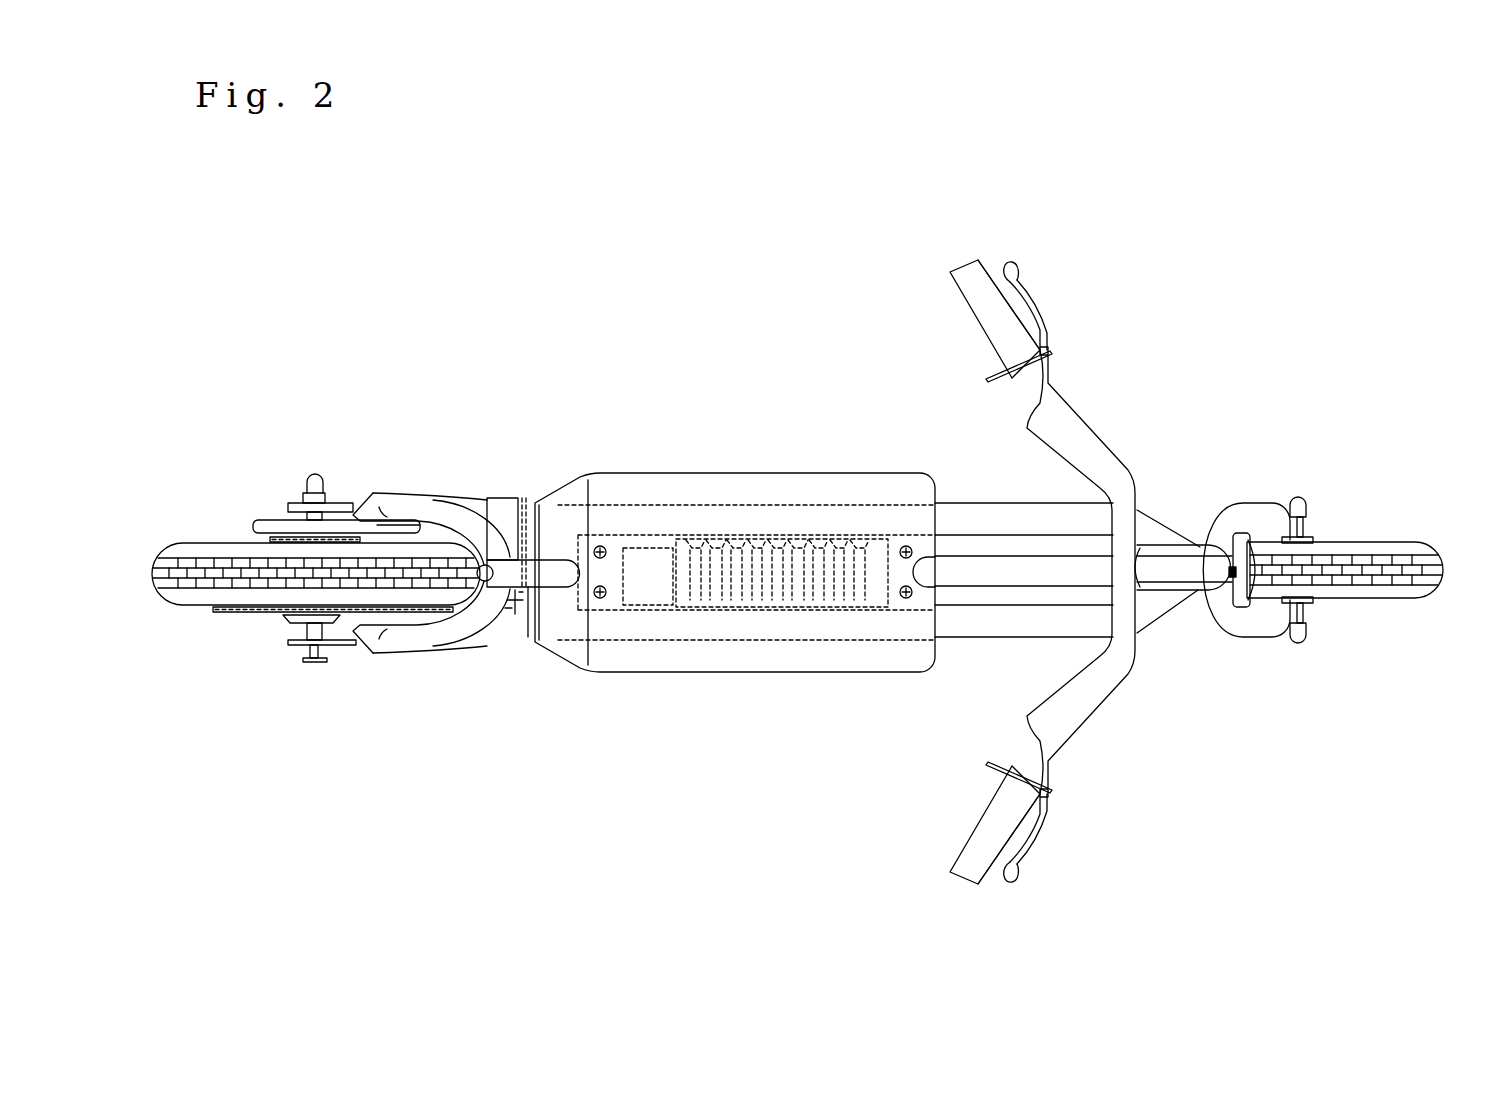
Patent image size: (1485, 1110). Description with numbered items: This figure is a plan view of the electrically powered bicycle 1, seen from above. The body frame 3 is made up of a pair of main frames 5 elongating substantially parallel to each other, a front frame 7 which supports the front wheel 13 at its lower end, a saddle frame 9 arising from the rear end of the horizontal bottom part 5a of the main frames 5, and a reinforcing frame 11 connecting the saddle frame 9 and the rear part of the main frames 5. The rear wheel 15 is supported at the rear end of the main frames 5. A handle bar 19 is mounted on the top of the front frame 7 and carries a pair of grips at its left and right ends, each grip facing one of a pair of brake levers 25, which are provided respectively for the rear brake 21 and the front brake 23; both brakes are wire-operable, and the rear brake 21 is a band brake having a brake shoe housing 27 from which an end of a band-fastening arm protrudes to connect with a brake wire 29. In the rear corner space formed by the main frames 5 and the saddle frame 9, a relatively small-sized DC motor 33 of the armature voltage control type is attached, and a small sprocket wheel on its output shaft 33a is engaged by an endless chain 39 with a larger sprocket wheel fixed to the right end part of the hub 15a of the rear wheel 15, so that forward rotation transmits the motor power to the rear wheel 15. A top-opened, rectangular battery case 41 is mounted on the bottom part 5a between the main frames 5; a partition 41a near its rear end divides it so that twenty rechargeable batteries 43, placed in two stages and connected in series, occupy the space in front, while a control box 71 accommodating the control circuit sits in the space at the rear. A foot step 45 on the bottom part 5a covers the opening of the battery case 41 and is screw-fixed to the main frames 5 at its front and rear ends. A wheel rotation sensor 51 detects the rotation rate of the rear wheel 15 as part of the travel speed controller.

The electrically powered bicycle 1 is at (1228, 272).
The body frame 3 is at (1163, 528).
The main frames 5 is at (980, 516).
The horizontal bottom part 5a is at (832, 522).
The front frame 7 is at (1182, 588).
The saddle frame 9 is at (545, 563).
The reinforcing frame 11 is at (421, 632).
The front wheel 13 is at (1393, 545).
The rear wheel 15 is at (200, 606).
The hub 15a is at (312, 622).
The handle bar 19 is at (1088, 456).
The rear brake 21 is at (255, 527).
The front brake 23 is at (1266, 606).
The brake levers 25 is at (1040, 310).
The brake shoe housing 27 is at (262, 520).
The brake wire 29 is at (1048, 386).
The DC motor 33 is at (506, 500).
The output shaft 33a is at (515, 612).
The endless chain 39 is at (255, 613).
The battery case 41 is at (684, 612).
The partition 41a is at (686, 540).
The batteries 43 is at (739, 612).
The foot step 45 is at (767, 478).
The wheel rotation sensor 51 is at (340, 538).
The control box 71 is at (657, 592).